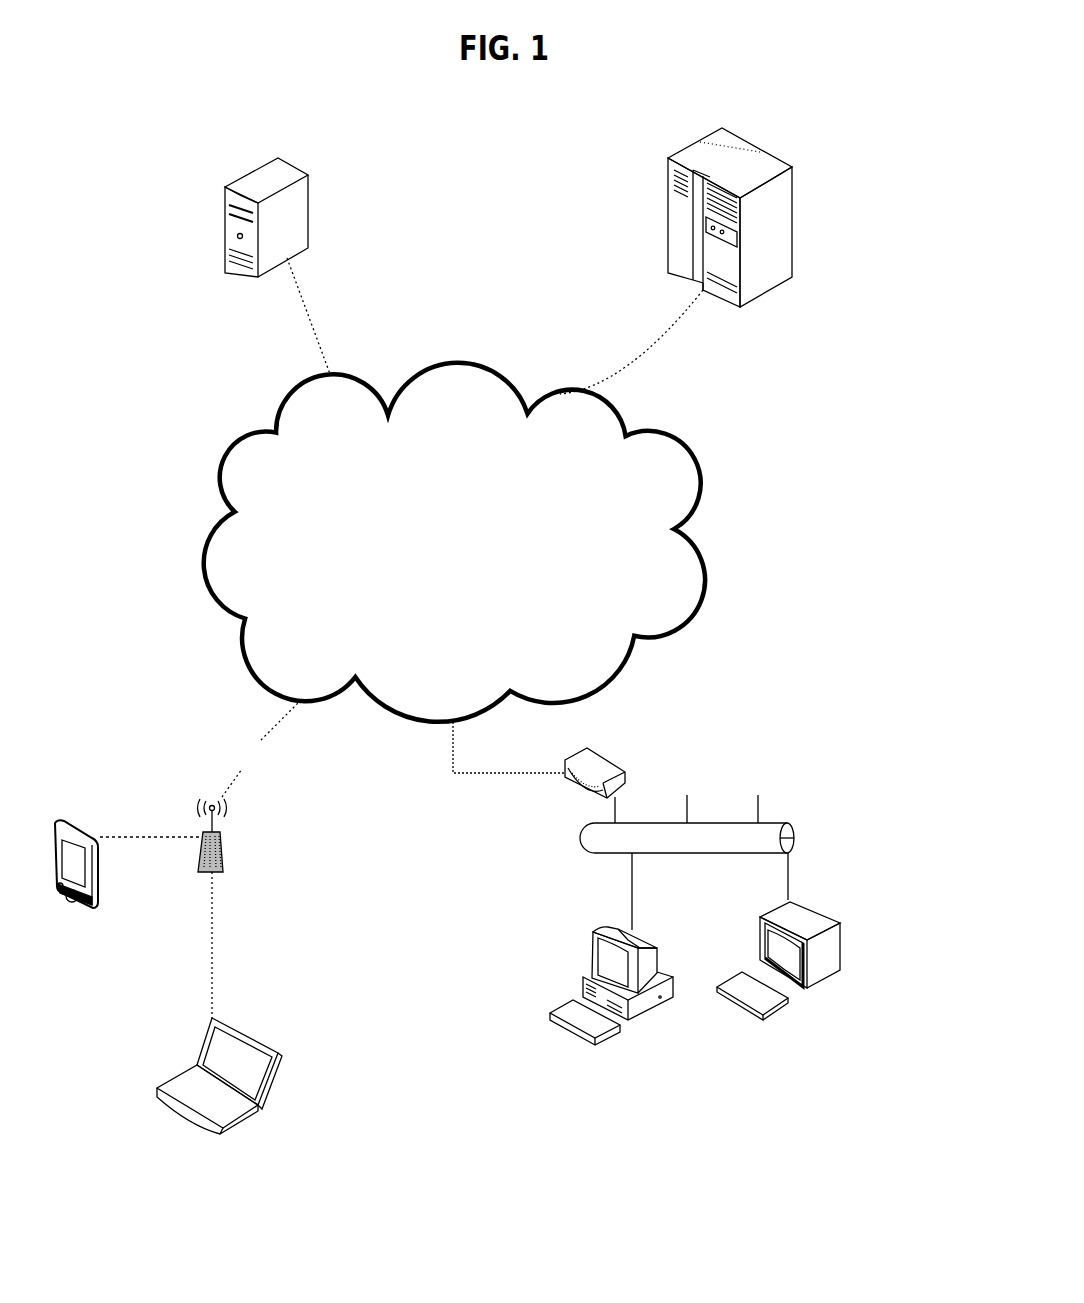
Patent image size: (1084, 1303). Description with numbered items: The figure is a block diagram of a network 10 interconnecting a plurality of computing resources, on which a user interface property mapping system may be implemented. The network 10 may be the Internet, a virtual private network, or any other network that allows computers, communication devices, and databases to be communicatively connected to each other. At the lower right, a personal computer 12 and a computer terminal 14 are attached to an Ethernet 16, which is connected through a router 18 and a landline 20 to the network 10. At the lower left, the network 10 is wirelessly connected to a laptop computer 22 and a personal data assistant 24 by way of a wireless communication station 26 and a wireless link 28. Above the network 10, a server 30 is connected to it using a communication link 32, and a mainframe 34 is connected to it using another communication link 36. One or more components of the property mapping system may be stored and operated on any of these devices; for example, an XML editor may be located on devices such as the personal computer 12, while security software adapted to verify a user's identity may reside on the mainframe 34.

The network 10 is at (454, 542).
The personal computer 12 is at (598, 932).
The computer terminal 14 is at (823, 913).
The Ethernet 16 is at (687, 824).
The router 18 is at (625, 772).
The landline 20 is at (502, 773).
The laptop computer 22 is at (248, 1110).
The personal data assistant 24 is at (82, 828).
The wireless communication station 26 is at (222, 855).
The wireless link 28 is at (261, 749).
The server 30 is at (308, 210).
The communication link 32 is at (322, 316).
The mainframe 34 is at (792, 277).
The communication link 36 is at (631, 342).